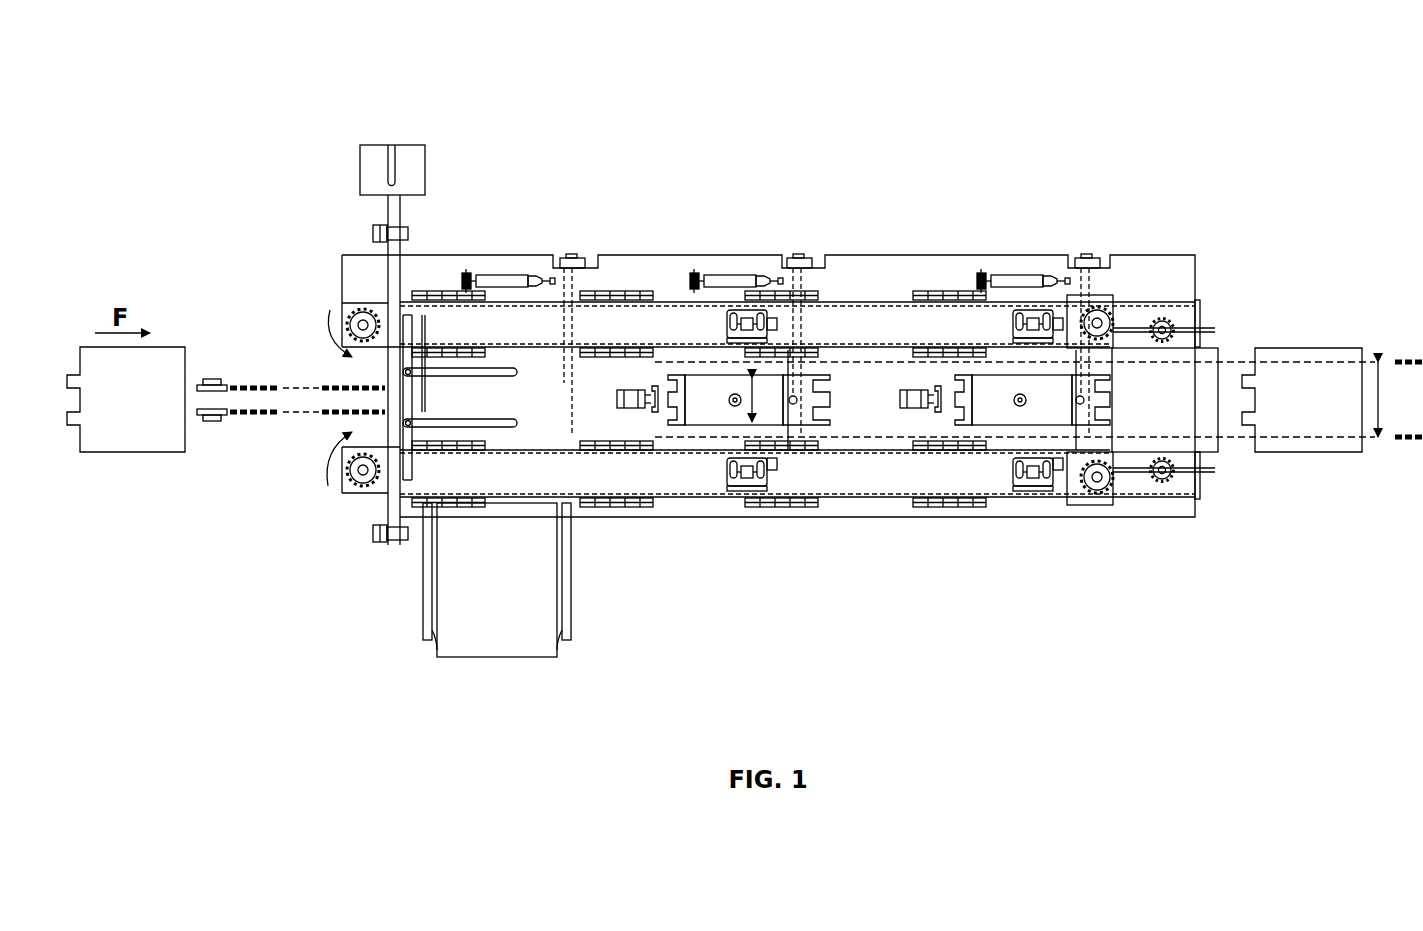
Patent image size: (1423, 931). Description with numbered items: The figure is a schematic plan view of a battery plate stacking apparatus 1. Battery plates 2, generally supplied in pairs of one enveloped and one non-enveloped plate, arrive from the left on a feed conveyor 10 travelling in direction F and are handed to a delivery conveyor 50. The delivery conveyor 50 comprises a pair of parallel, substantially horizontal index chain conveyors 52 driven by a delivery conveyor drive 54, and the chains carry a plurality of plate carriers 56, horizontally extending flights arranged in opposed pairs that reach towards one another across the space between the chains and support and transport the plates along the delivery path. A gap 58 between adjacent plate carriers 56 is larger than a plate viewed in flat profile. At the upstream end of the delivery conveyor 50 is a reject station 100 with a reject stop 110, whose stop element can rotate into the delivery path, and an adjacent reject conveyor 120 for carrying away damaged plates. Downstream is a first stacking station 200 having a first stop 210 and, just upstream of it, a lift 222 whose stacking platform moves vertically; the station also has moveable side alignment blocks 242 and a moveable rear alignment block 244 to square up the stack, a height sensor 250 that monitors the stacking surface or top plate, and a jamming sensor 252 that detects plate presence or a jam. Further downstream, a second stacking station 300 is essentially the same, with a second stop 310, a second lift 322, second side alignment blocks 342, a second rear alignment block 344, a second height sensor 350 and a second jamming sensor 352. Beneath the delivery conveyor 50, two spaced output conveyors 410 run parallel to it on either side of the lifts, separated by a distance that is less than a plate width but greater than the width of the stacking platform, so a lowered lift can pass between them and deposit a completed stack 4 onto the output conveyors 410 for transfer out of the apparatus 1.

The battery plate stacking apparatus 1 is at (212, 73).
The battery plate 2 is at (125, 445).
The stack 4 is at (1270, 453).
The feed conveyor 10 is at (262, 386).
The delivery conveyor 50 is at (345, 272).
The index chain conveyor 52 is at (455, 320).
The delivery conveyor drive 54 is at (388, 213).
The plate carrier 56 is at (425, 292).
The gap 58 is at (573, 300).
The reject station 100 is at (500, 128).
The reject stop 110 is at (540, 330).
The reject conveyor 120 is at (485, 640).
The first stacking station 200 is at (762, 113).
The first stop 210 is at (850, 300).
The lift 222 is at (700, 430).
The side alignment block 242 is at (745, 310).
The rear alignment block 244 is at (600, 458).
The height sensor 250 is at (770, 500).
The jamming sensor 252 is at (793, 372).
The second stacking station 300 is at (1033, 113).
The second stop 310 is at (1105, 325).
The second lift 322 is at (1005, 410).
The second side alignment block 342 is at (1030, 310).
The second rear alignment block 344 is at (920, 430).
The second height sensor 350 is at (1060, 497).
The second jamming sensor 352 is at (1075, 372).
The output conveyor 410 is at (1315, 352).